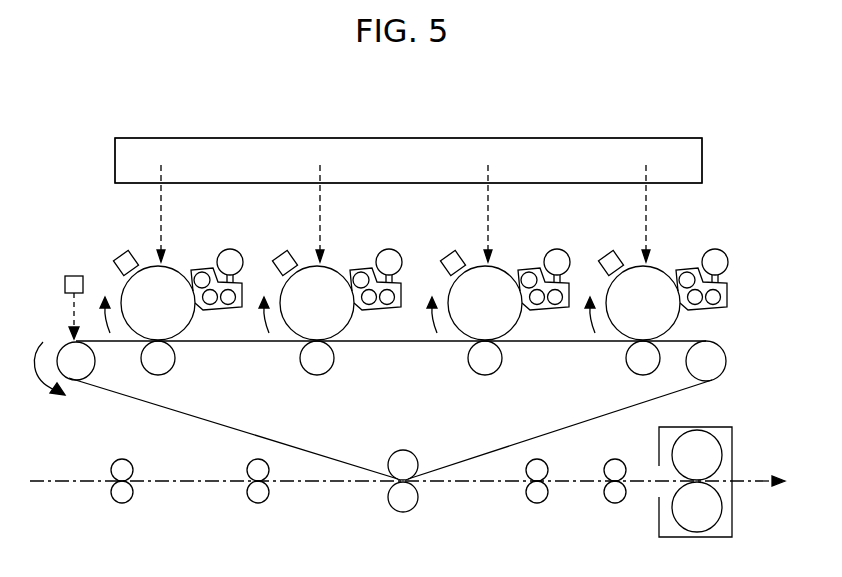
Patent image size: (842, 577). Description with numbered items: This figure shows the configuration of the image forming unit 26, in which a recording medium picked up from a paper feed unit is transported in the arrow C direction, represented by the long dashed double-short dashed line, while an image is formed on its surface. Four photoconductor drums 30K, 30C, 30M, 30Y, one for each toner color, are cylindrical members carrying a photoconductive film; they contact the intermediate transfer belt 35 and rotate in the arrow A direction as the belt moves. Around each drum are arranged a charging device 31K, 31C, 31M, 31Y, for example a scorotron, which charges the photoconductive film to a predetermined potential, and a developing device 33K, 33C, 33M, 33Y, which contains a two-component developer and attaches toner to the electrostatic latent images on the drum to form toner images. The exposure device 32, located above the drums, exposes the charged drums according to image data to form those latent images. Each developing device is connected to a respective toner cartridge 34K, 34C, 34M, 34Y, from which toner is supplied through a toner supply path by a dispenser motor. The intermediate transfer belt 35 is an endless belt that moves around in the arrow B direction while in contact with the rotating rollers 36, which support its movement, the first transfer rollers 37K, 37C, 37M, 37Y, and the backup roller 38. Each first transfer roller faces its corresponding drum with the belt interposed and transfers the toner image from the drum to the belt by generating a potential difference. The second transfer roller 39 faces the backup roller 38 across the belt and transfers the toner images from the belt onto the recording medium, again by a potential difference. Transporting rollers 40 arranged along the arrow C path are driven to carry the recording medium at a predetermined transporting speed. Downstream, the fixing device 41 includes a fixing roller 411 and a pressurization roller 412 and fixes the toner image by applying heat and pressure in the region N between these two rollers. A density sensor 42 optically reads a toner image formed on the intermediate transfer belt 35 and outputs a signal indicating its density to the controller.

The image forming unit 26 is at (726, 140).
The exposure device 32 is at (115, 165).
The density sensor 42 is at (72, 276).
The photoconductor drum 30K is at (158, 303).
The photoconductor drum 30C is at (317, 303).
The photoconductor drum 30M is at (485, 303).
The photoconductor drum 30Y is at (643, 303).
The charging device 31K is at (120, 246).
The charging device 31C is at (279, 246).
The charging device 31M is at (447, 246).
The charging device 31Y is at (605, 246).
The developing device 33K is at (209, 271).
The developing device 33C is at (368, 271).
The developing device 33M is at (536, 271).
The developing device 33Y is at (694, 271).
The toner cartridge 34K is at (234, 247).
The toner cartridge 34C is at (393, 247).
The toner cartridge 34M is at (562, 247).
The toner cartridge 34Y is at (718, 247).
The intermediate transfer belt 35 is at (247, 432).
The rotating roller 36 is at (74, 372).
The first transfer roller 37K is at (186, 361).
The first transfer roller 37C is at (345, 361).
The first transfer roller 37M is at (514, 361).
The first transfer roller 37Y is at (620, 366).
The backup roller 38 is at (403, 450).
The second transfer roller 39 is at (388, 494).
The transporting rollers 40 is at (122, 459).
The fixing device 41 is at (715, 427).
The fixing roller 411 is at (677, 457).
The pressurization roller 412 is at (680, 517).
The arrow A direction A is at (345, 319).
The arrow B direction B is at (49, 379).
The arrow C direction C is at (407, 471).
The region N is at (700, 483).